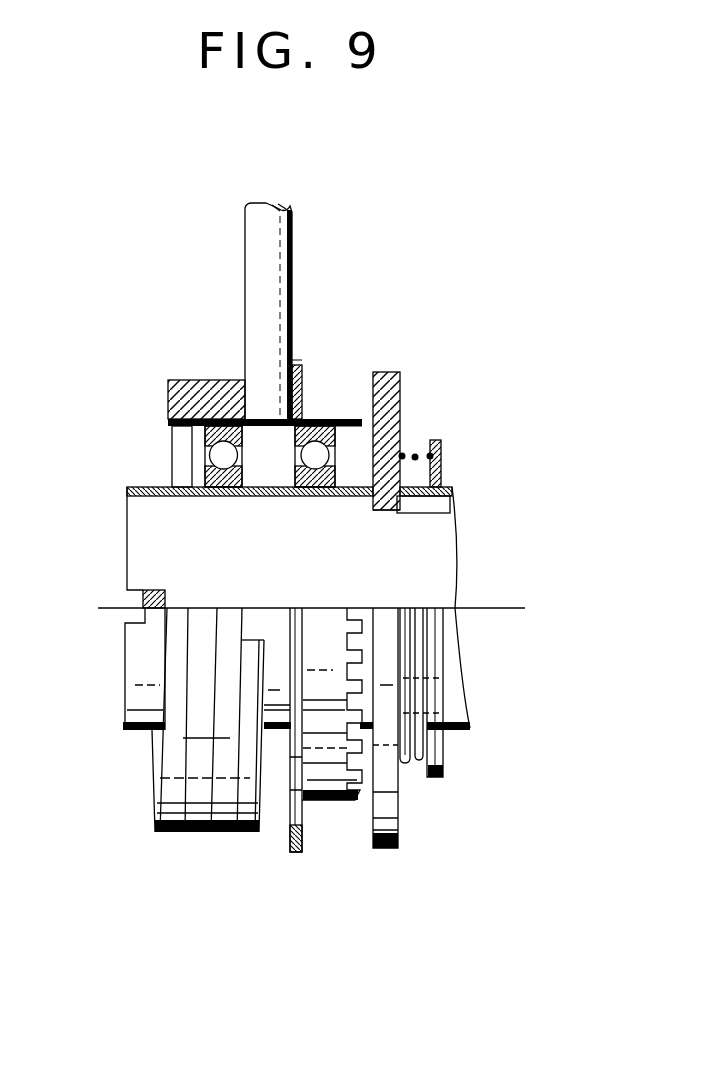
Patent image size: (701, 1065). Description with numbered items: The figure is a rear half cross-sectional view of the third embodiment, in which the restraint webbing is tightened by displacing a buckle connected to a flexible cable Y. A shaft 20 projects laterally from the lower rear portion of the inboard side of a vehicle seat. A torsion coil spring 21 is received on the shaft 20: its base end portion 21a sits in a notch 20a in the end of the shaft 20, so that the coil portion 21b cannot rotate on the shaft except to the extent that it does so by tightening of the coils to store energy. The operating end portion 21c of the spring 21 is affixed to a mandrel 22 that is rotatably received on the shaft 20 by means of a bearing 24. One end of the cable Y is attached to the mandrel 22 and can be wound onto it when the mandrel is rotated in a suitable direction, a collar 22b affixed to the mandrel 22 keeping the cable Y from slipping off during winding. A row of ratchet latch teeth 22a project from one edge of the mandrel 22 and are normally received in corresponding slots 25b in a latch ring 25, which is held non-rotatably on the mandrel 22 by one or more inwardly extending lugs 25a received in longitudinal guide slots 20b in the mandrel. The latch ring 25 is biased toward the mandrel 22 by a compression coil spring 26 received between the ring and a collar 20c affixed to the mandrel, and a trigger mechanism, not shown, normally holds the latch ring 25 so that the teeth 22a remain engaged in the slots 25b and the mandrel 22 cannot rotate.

The flexible cable Y is at (286, 250).
The shaft 20 is at (313, 497).
The notch 20a is at (136, 598).
The longitudinal guide slots 20b is at (360, 499).
The collar 20c is at (442, 451).
The torsion coil spring 21 is at (221, 840).
The base end portion 21a is at (147, 616).
The coil portion 21b is at (176, 380).
The operating end portion 21c is at (258, 667).
The mandrel 22 is at (172, 434).
The ratchet latch teeth 22a is at (350, 418).
The collar 22b is at (297, 364).
The bearing 24 is at (312, 418).
The latch ring 25 is at (390, 372).
The inwardly extending lugs 25a is at (443, 512).
The slots 25b is at (404, 452).
The compression coil spring 26 is at (416, 453).